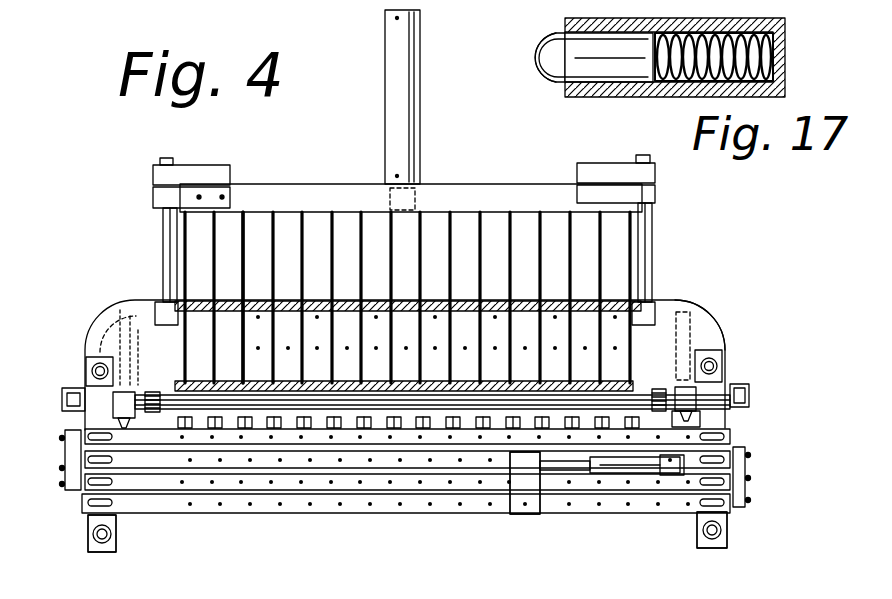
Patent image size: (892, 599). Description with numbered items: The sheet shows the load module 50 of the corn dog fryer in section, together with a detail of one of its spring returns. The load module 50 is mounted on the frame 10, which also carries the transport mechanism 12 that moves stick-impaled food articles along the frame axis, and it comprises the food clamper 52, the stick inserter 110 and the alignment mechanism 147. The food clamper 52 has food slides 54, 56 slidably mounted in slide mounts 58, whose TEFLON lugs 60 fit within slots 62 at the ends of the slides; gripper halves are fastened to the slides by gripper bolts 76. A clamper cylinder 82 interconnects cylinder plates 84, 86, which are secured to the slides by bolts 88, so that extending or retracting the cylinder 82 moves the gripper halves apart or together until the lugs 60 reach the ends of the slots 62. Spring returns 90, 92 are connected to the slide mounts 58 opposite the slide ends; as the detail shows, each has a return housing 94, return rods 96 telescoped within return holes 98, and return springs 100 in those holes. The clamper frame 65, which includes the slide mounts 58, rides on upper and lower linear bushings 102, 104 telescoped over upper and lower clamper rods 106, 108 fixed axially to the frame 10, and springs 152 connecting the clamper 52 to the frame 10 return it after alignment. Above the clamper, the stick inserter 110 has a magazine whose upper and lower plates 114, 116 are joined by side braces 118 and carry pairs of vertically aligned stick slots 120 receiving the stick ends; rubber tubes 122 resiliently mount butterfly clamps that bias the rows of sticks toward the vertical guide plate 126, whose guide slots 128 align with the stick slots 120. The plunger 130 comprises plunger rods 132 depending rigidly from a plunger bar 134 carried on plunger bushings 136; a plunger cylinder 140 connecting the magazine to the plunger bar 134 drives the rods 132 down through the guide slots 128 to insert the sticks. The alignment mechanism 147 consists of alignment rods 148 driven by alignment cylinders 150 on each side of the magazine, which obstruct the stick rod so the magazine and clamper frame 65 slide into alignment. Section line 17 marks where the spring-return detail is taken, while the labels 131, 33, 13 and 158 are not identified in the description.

In FIG. 4, the plunger cylinder 140 is at (388, 92).
In FIG. 4, the plunger bar 134 is at (462, 186).
In FIG. 4, the plunger 130 is at (324, 176).
In FIG. 4, the plunger bushings 136 is at (153, 195).
In FIG. 4, the guide post 131 is at (163, 233).
In FIG. 4, the stick inserter 110 is at (150, 258).
In FIG. 4, the load module 50 is at (666, 252).
In FIG. 4, the plunger rods 132 is at (316, 276).
In FIG. 4, the upper plate 114 is at (244, 300).
In FIG. 4, the side braces 118 is at (228, 330).
In FIG. 4, the alignment cylinders 150 is at (108, 314).
In FIG. 4, the alignment mechanism 147 is at (704, 310).
In FIG. 4, the guide slots 128 is at (272, 362).
In FIG. 4, the stick slots 120 is at (270, 330).
In FIG. 4, the guide plate 126 is at (322, 334).
In FIG. 4, the lower plate 116 is at (304, 376).
In FIG. 4, the pin 33 is at (468, 380).
In FIG. 4, the rubber tubes 122 is at (556, 346).
In FIG. 4, the alignment rods 148 is at (676, 376).
In FIG. 4, the upper linear bushings 102 is at (86, 364).
In FIG. 4, the upper clamper rod 106 is at (722, 358).
In FIG. 4, the slide mounts 58 is at (726, 408).
In FIG. 4, the section line 13 is at (100, 422).
In FIG. 4, the frame 10 is at (752, 392).
In FIG. 4, the cylinder plate 84 is at (666, 438).
In FIG. 4, the food slide 54 is at (147, 436).
In FIG. 4, the slots 62 is at (86, 460).
In FIG. 4, the spring return 90 is at (65, 482).
In FIG. 17, the spring return 90 is at (548, 90).
In FIG. 4, the food slide 56 is at (172, 514).
In FIG. 4, the gripper bolts 76 is at (196, 506).
In FIG. 4, the food clamper 52 is at (304, 520).
In FIG. 4, the springs 152 is at (750, 478).
In FIG. 4, the spring return 92 is at (750, 456).
In FIG. 4, the TEFLON lugs 60 is at (732, 442).
In FIG. 4, the bolts 88 is at (526, 506).
In FIG. 4, the cylinder plate 86 is at (512, 512).
In FIG. 4, the clamper cylinder 82 is at (620, 480).
In FIG. 4, the lower clamper rod 108 is at (116, 538).
In FIG. 4, the lower linear bushings 104 is at (118, 552).
In FIG. 4, the food clamper frame 65 is at (72, 536).
In FIG. 4, the section line 17 is at (712, 500).
In FIG. 4, the transport mechanism 12 is at (676, 596).
In FIG. 4, the support 158 is at (106, 596).
In FIG. 17, the return holes 98 is at (558, 34).
In FIG. 17, the return housing 94 is at (578, 98).
In FIG. 17, the return rods 96 is at (530, 62).
In FIG. 17, the return springs 100 is at (772, 52).